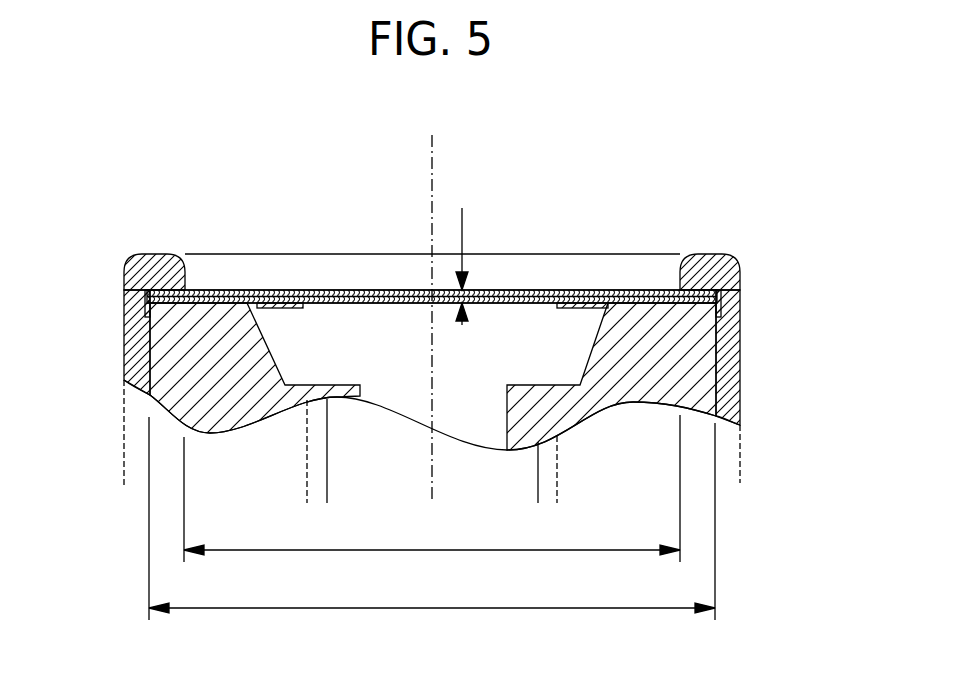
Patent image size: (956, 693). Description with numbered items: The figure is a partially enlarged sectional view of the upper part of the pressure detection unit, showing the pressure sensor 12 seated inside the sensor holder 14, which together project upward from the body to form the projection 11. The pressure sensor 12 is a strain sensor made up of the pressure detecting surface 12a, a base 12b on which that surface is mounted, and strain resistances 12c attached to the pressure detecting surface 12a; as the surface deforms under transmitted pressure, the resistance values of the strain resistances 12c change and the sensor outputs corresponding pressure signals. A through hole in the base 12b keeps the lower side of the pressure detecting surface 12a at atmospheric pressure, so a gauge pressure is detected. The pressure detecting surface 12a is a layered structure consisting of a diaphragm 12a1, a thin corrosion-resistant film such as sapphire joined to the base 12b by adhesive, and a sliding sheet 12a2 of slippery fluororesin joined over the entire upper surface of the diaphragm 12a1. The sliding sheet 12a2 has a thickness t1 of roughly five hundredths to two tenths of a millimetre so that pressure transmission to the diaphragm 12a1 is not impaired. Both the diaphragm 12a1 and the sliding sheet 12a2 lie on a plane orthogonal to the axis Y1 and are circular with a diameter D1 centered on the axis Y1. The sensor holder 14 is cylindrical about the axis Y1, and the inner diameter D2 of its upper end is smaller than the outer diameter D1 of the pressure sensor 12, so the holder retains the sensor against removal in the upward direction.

The projection 11 is at (685, 229).
The pressure sensor 12 is at (756, 265).
The pressure detecting surface 12a is at (433, 303).
The diaphragm 12a1 is at (300, 290).
The sliding sheet 12a2 is at (583, 290).
The base 12b is at (712, 377).
The strain resistances 12c is at (303, 306).
The sensor holder 14 is at (125, 277).
The axis Y1 is at (432, 148).
The thickness of the sliding sheet t1 is at (475, 266).
The diameter D1 is at (432, 518).
The inner diameter D2 is at (432, 488).